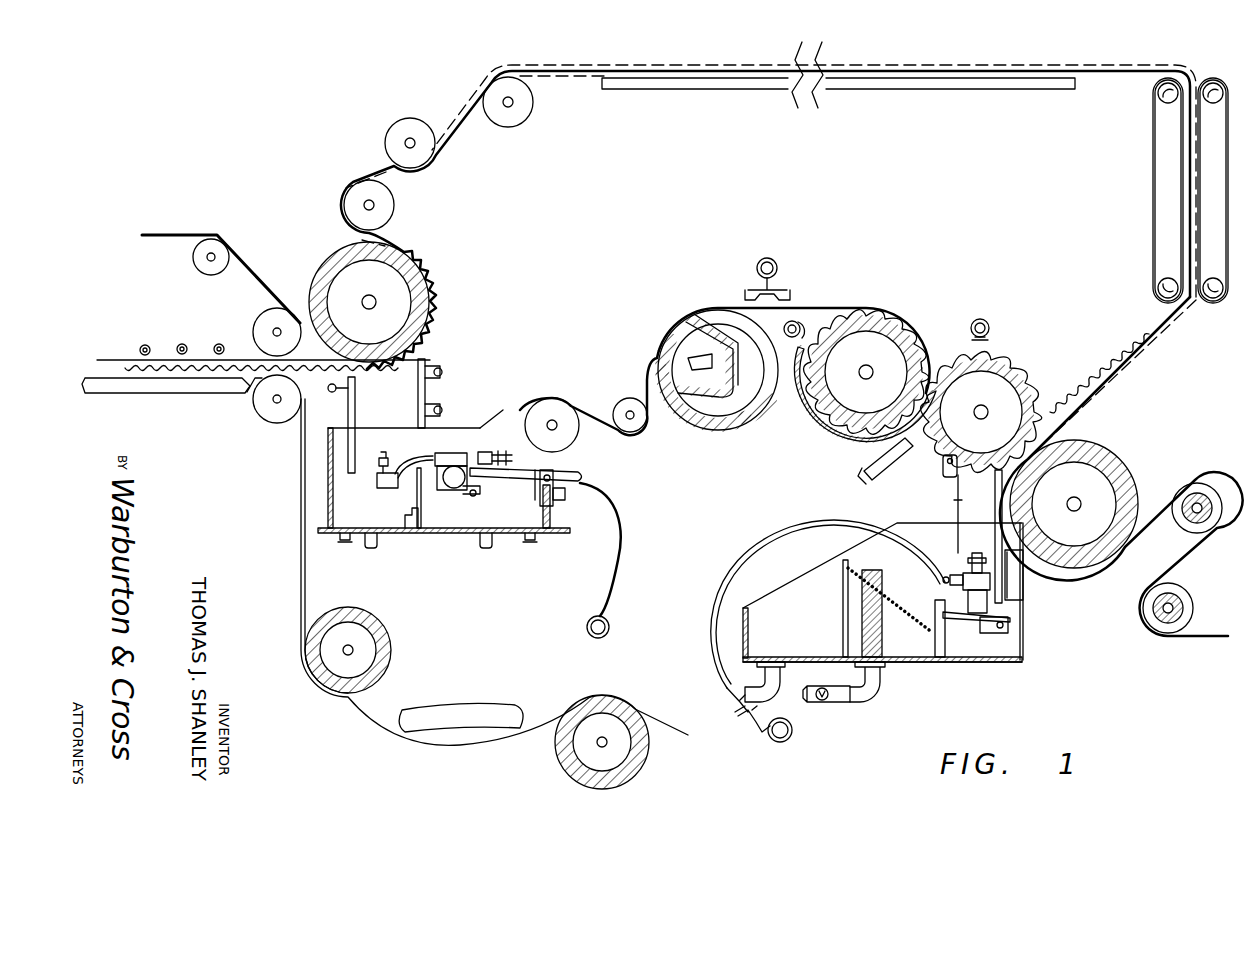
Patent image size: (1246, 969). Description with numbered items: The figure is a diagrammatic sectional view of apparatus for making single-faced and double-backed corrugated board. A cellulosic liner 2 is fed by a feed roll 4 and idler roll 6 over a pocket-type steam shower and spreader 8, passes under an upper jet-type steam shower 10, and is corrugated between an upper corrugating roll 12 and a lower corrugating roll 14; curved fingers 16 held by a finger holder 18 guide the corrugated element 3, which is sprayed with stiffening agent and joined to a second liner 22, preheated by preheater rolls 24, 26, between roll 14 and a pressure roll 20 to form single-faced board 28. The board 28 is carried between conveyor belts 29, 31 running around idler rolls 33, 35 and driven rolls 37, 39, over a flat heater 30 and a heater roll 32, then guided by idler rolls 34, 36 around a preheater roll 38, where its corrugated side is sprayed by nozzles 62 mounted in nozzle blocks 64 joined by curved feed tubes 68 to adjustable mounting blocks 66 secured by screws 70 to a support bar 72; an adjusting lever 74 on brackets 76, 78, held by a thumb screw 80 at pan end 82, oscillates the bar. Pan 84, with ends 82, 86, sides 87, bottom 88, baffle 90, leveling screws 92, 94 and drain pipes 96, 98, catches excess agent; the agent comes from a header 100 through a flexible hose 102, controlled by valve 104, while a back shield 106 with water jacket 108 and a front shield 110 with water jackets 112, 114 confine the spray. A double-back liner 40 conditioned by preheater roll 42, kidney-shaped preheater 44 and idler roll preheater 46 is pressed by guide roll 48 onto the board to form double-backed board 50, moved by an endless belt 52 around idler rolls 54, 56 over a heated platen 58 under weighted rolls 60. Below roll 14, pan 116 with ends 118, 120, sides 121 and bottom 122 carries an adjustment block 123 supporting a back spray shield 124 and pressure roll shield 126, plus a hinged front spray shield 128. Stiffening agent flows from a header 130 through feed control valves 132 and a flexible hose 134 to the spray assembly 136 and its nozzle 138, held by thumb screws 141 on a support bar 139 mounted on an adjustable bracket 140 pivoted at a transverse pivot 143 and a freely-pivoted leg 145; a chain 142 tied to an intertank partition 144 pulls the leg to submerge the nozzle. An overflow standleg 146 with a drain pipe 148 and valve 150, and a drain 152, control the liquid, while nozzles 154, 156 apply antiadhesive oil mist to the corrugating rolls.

The cellulosic sheet or liner 2 is at (522, 408).
The corrugated element 3 is at (1073, 400).
The feed roll 4 is at (575, 432).
The idler roll 6 is at (625, 401).
The pocket-type steam shower and spreader 8 is at (742, 422).
The upper jet-type steam shower 10 is at (778, 266).
The upper corrugating roll 12 is at (911, 324).
The lower corrugating roll 14 is at (1025, 372).
The curved fingers 16 is at (943, 462).
The finger holder 18 is at (878, 452).
The smooth surfaced pressure roll 20 is at (1122, 473).
The second cellulosic liner 22 is at (1226, 634).
The steam-heated preheater roll 24 is at (1189, 603).
The steam-heated preheater roll 26 is at (1180, 528).
The single-faced corrugated board 28 is at (447, 166).
The endless conveyor belt 29 is at (1147, 248).
The stationary flat heater 30 is at (896, 91).
The endless conveyor belt 31 is at (1226, 292).
The heater roll 32 is at (532, 104).
The idler roll 33 is at (1158, 292).
The idler roll 34 is at (419, 127).
The idler roll 35 is at (1211, 300).
The idler roll 36 is at (393, 206).
The driven roll 37 is at (1160, 95).
The double-backed smooth surfaced preheater roll 38 is at (333, 270).
The driven roll 39 is at (1213, 83).
The double-back liner 40 is at (660, 718).
The preheater roll 42 is at (645, 746).
The stationary kidney-shaped preheater 44 is at (460, 710).
The idler roll preheater 46 is at (393, 645).
The smooth surfaced roll 48 is at (270, 416).
The double-backed corrugated board 50 is at (252, 387).
The endless belt 52 is at (249, 272).
The idler roll 54 is at (215, 273).
The idler roll 56 is at (260, 329).
The stationary heated platen 58 is at (155, 392).
The weighted rolls 60 is at (140, 350).
The nozzles 62 is at (374, 458).
The nozzle block 64 is at (377, 486).
The adjustable mounting block 66 is at (446, 456).
The rigid curved feed tube 68 is at (410, 460).
The securing screw 70 is at (478, 494).
The support bar 72 is at (458, 486).
The adjusting lever 74 is at (586, 477).
The bracket 76 is at (536, 500).
The bracket 78 is at (556, 474).
The thumb screw 80 is at (566, 494).
The pan end 82 is at (552, 514).
The pan 84 is at (459, 540).
The pan end 86 is at (334, 516).
The pan side 87 is at (488, 416).
The pan bottom 88 is at (414, 534).
The adjustable vertical baffle 90 is at (423, 495).
The leveling screw 92 is at (344, 544).
The leveling screw 94 is at (537, 543).
The drain pipe 96 is at (371, 549).
The drain pipe 98 is at (488, 550).
The header 100 is at (587, 623).
The flexible hose 102 is at (622, 545).
The valve 104 is at (480, 456).
The back shield 106 is at (361, 416).
The water jacket 108 is at (332, 393).
The front shield 110 is at (411, 390).
The water jacket 112 is at (432, 366).
The water jacket 114 is at (432, 400).
The open top container or pan 116 is at (918, 668).
The pan end 118 is at (748, 640).
The pan end 120 is at (1024, 643).
The pan side 121 is at (783, 592).
The pan bottom 122 is at (1005, 664).
The pressure roll shield adjustment block 123 is at (1012, 585).
The back spray shield 124 is at (996, 505).
The curved pressure roll shield 126 is at (1015, 570).
The hinged front spray shield 128 is at (956, 497).
The header 130 is at (791, 738).
The feed control valves 132 is at (756, 722).
The flexible hose 134 is at (716, 577).
The spray assembly 136 is at (958, 572).
The spray nozzle 138 is at (977, 553).
The spray assembly support bar 139 is at (975, 620).
The adjustable bracket 140 is at (994, 634).
The thumb screws 141 is at (944, 577).
The chain 142 is at (918, 625).
The transverse pivot 143 is at (1004, 624).
The intertank partition 144 is at (843, 595).
The freely-pivoted leg 145 is at (945, 655).
The removable overflow standleg 146 is at (882, 595).
The drain pipe 148 is at (878, 696).
The valve 150 is at (825, 700).
The drain 152 is at (782, 684).
The nozzle 154 is at (795, 320).
The nozzle 156 is at (990, 326).